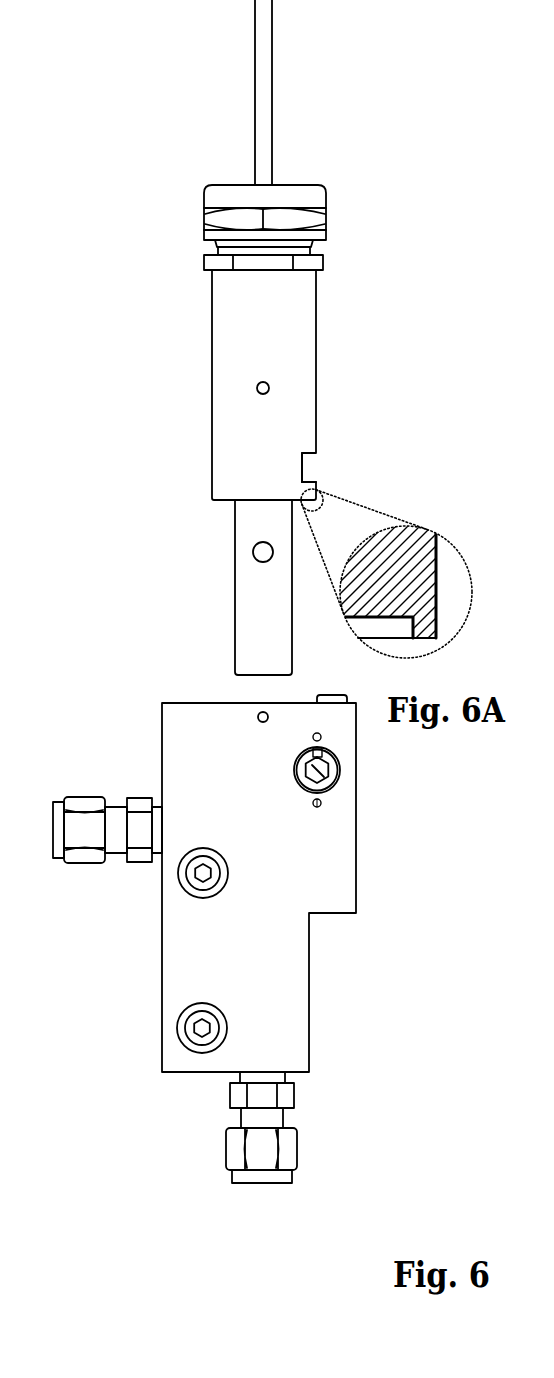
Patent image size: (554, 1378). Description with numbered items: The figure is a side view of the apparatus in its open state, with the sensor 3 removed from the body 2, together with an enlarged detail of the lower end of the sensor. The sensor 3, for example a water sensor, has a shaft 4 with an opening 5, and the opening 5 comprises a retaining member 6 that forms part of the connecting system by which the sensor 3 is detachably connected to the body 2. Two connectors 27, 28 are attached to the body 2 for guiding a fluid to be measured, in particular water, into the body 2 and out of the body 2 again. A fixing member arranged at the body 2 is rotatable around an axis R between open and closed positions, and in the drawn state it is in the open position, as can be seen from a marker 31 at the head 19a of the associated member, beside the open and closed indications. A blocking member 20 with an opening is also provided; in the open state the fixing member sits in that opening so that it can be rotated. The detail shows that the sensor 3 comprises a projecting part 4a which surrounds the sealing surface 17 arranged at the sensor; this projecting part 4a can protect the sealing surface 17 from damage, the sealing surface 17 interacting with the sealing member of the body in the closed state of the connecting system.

In FIG. 6, the body 2 is at (397, 1063).
In FIG. 6, the sensor 3 is at (362, 203).
In FIG. 6, the shaft 4 is at (212, 419).
In FIG. 6A, the shaft 4 is at (436, 585).
In FIG. 6A, the projecting part 4a is at (432, 636).
In FIG. 6, the opening 5 is at (310, 462).
In FIG. 6, the retaining member 6 is at (316, 482).
In FIG. 6A, the sealing surface 17 is at (382, 618).
In FIG. 6, the head 19a is at (320, 797).
In FIG. 6, the blocking member 20 is at (325, 694).
In FIG. 6, the connector 27 is at (90, 858).
In FIG. 6, the connector 28 is at (228, 1147).
In FIG. 6, the marker 31 is at (337, 760).
In FIG. 6, the axis R is at (323, 775).